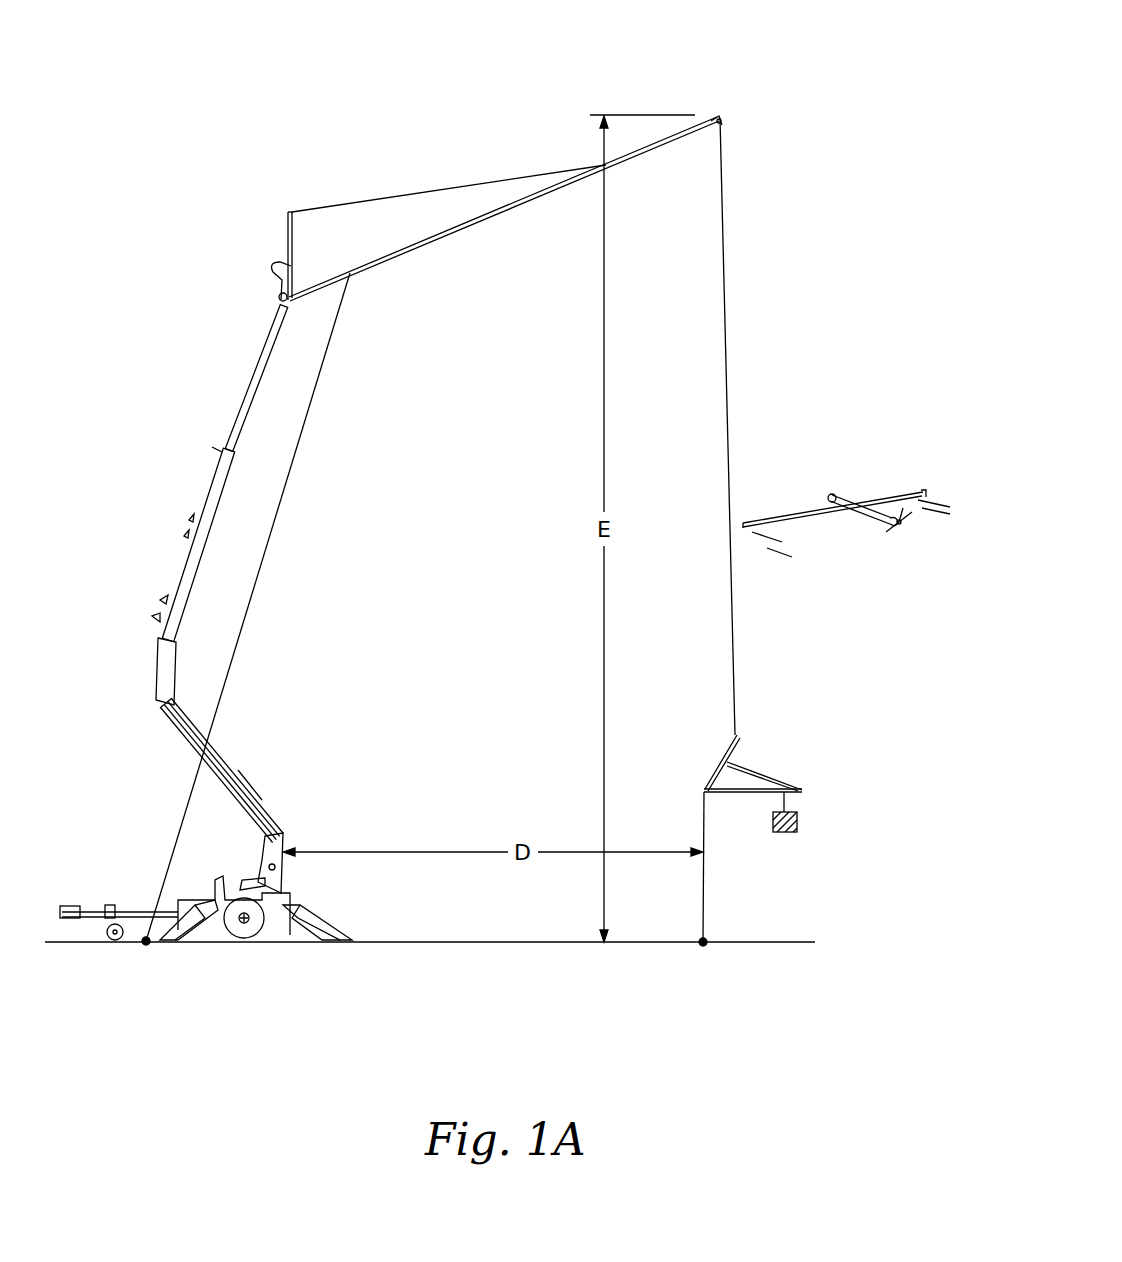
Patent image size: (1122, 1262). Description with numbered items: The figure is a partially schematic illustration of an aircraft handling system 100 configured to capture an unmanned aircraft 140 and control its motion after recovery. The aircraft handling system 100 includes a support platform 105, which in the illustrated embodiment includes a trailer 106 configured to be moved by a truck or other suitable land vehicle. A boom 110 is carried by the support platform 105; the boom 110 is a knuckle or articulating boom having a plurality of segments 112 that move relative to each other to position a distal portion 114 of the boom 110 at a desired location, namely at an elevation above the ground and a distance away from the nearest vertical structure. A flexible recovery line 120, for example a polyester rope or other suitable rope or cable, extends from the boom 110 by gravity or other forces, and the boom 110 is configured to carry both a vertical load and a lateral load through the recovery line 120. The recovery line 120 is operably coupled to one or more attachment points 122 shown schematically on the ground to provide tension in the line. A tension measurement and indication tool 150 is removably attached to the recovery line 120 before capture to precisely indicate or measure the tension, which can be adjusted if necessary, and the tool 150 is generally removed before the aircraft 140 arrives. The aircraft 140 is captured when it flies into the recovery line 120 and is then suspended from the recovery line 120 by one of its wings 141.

The aircraft handling system 100 is at (100, 325).
The support platform 105 is at (316, 890).
The trailer 106 is at (280, 940).
The boom 110 is at (212, 465).
The segments 112 is at (465, 230).
The distal portion 114 is at (722, 113).
The recovery line 120 is at (737, 290).
The attachment points 122 is at (150, 947).
The unmanned aircraft 140 is at (858, 517).
The wing 141 is at (797, 513).
The tension measurement and indication tool 150 is at (768, 755).